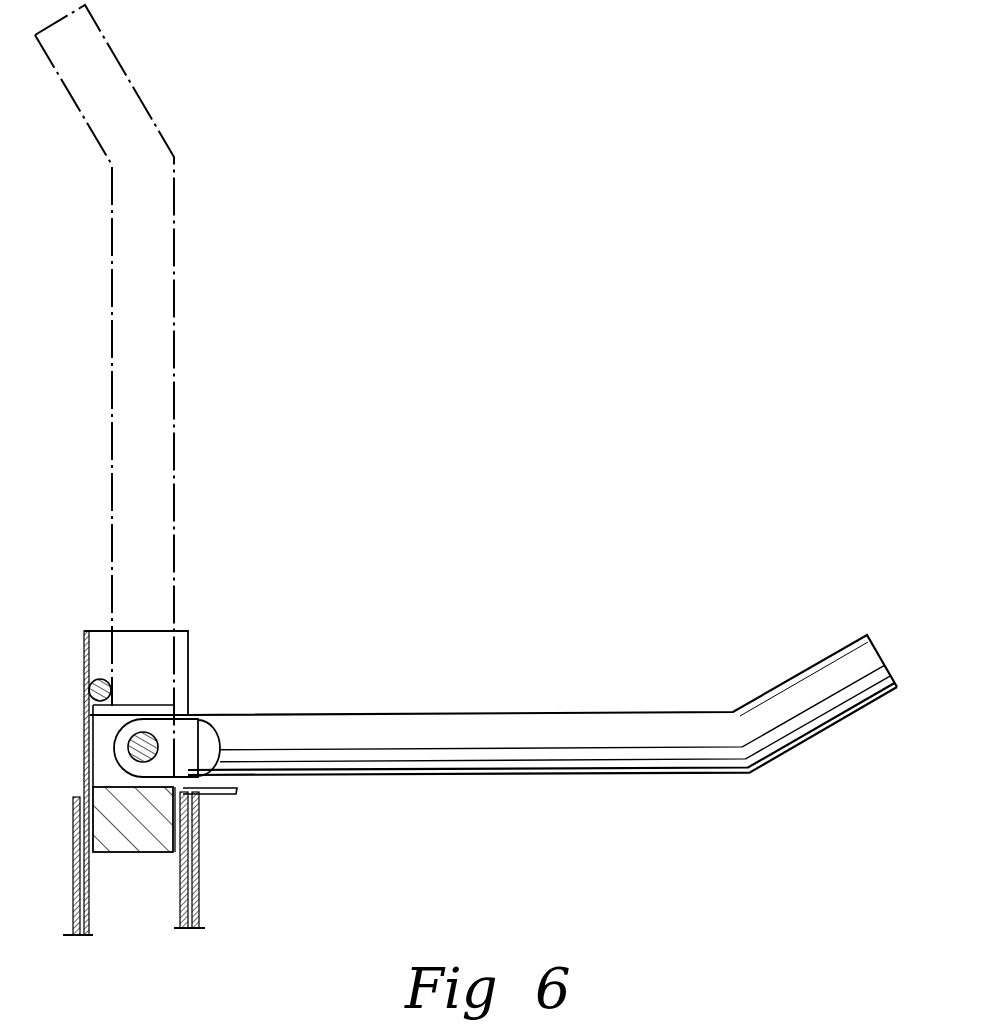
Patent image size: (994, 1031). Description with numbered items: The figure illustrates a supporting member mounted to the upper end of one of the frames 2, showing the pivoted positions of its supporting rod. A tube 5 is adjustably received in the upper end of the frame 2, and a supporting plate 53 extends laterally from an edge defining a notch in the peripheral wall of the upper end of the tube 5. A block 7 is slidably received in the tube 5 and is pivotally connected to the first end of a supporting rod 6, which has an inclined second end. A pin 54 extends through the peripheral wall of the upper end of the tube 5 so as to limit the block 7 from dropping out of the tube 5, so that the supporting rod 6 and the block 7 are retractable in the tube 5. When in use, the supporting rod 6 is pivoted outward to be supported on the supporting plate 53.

The frame 2 is at (199, 906).
The tube 5 is at (83, 742).
The supporting rod 6 is at (542, 777).
The block 7 is at (135, 712).
The supporting plate 53 is at (221, 797).
The pin 54 is at (97, 678).